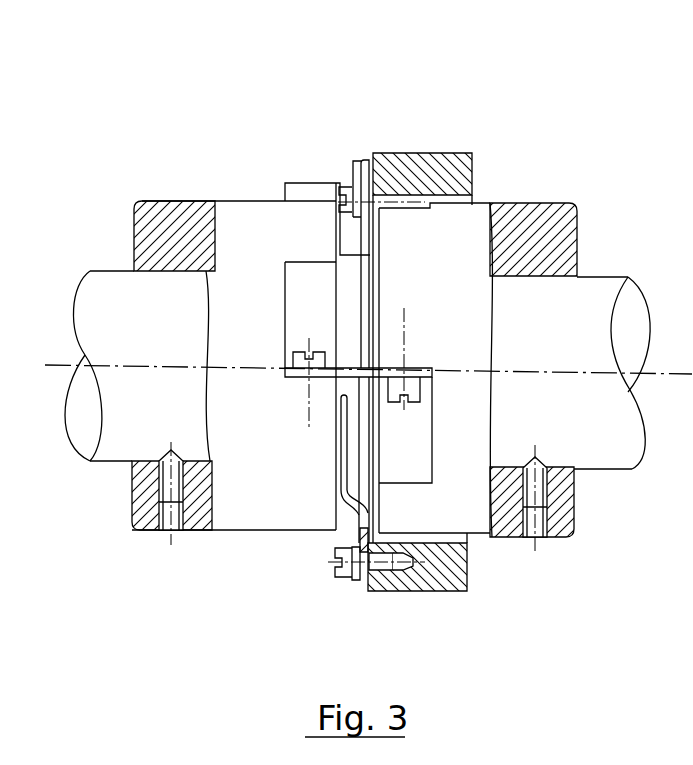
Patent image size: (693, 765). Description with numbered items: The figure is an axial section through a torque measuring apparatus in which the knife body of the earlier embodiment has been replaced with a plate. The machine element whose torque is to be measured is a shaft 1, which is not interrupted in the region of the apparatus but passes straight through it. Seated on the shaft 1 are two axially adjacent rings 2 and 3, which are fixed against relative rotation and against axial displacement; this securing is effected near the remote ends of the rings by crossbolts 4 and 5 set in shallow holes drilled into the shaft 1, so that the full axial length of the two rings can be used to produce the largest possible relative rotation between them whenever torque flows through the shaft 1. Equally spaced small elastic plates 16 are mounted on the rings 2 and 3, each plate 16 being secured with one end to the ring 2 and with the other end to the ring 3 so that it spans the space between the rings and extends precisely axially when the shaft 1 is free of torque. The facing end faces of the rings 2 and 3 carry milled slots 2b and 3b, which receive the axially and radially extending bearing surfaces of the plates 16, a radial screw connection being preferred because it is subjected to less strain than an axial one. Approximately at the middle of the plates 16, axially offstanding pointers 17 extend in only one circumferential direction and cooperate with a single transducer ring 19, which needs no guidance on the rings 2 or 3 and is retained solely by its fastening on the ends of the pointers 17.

The shaft 1 is at (110, 297).
The ring 2 is at (165, 228).
The milled slot 2b is at (302, 294).
The elastic plate 16 is at (357, 368).
The pointer 17 is at (338, 538).
The ring 3 is at (523, 229).
The milled slot 3b is at (407, 428).
The transducer ring 19 is at (433, 555).
The crossbolt 4 is at (132, 498).
The crossbolt 5 is at (533, 485).